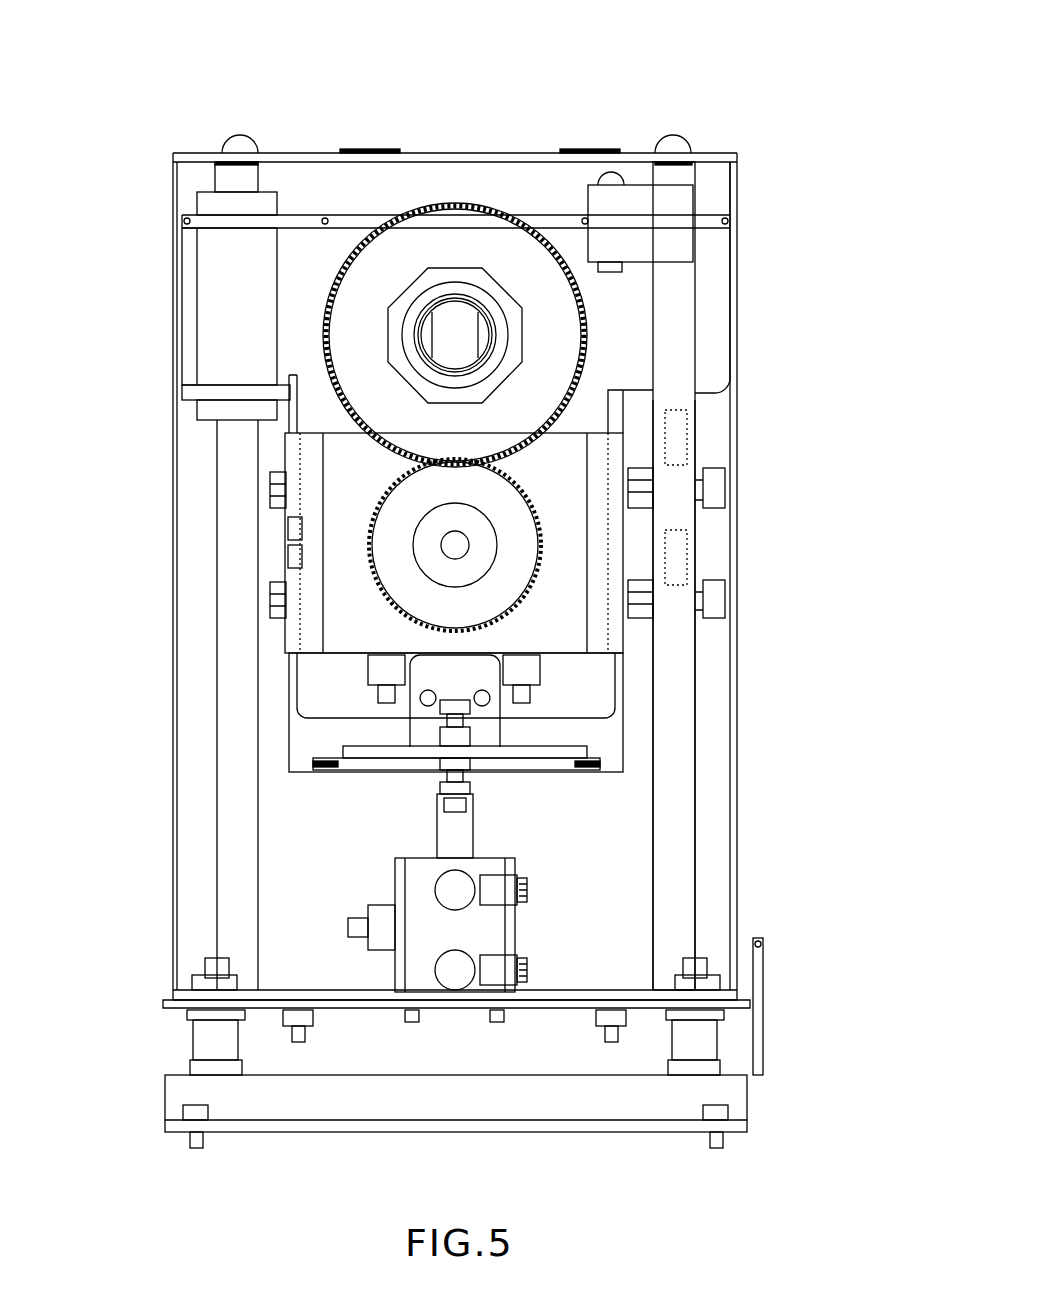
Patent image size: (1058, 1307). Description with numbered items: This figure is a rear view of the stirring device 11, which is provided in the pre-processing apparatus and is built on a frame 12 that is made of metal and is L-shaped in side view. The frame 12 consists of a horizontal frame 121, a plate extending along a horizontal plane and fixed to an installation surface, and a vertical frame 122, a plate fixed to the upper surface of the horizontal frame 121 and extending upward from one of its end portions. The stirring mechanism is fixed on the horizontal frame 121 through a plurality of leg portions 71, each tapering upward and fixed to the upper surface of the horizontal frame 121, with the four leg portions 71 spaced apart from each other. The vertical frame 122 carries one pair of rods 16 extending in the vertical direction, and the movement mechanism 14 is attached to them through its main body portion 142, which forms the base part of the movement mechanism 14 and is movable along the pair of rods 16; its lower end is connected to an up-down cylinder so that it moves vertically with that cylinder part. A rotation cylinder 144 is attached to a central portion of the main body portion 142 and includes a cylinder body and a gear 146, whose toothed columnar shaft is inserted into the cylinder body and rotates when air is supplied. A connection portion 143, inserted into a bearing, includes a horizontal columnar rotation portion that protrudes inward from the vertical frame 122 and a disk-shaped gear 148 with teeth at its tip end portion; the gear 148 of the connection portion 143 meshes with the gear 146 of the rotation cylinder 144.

The stirring device 11 is at (656, 76).
The frame 12 is at (278, 1133).
The movement mechanism 14 is at (358, 798).
The rods 16 is at (230, 690).
The leg portions 71 is at (686, 1040).
The horizontal frame 121 is at (165, 1003).
The vertical frame 122 is at (737, 153).
The main body portion 142 is at (600, 690).
The connection portion 143 is at (458, 206).
The rotation cylinder 144 is at (522, 488).
The gear 146 is at (527, 522).
The gear 148 is at (383, 256).